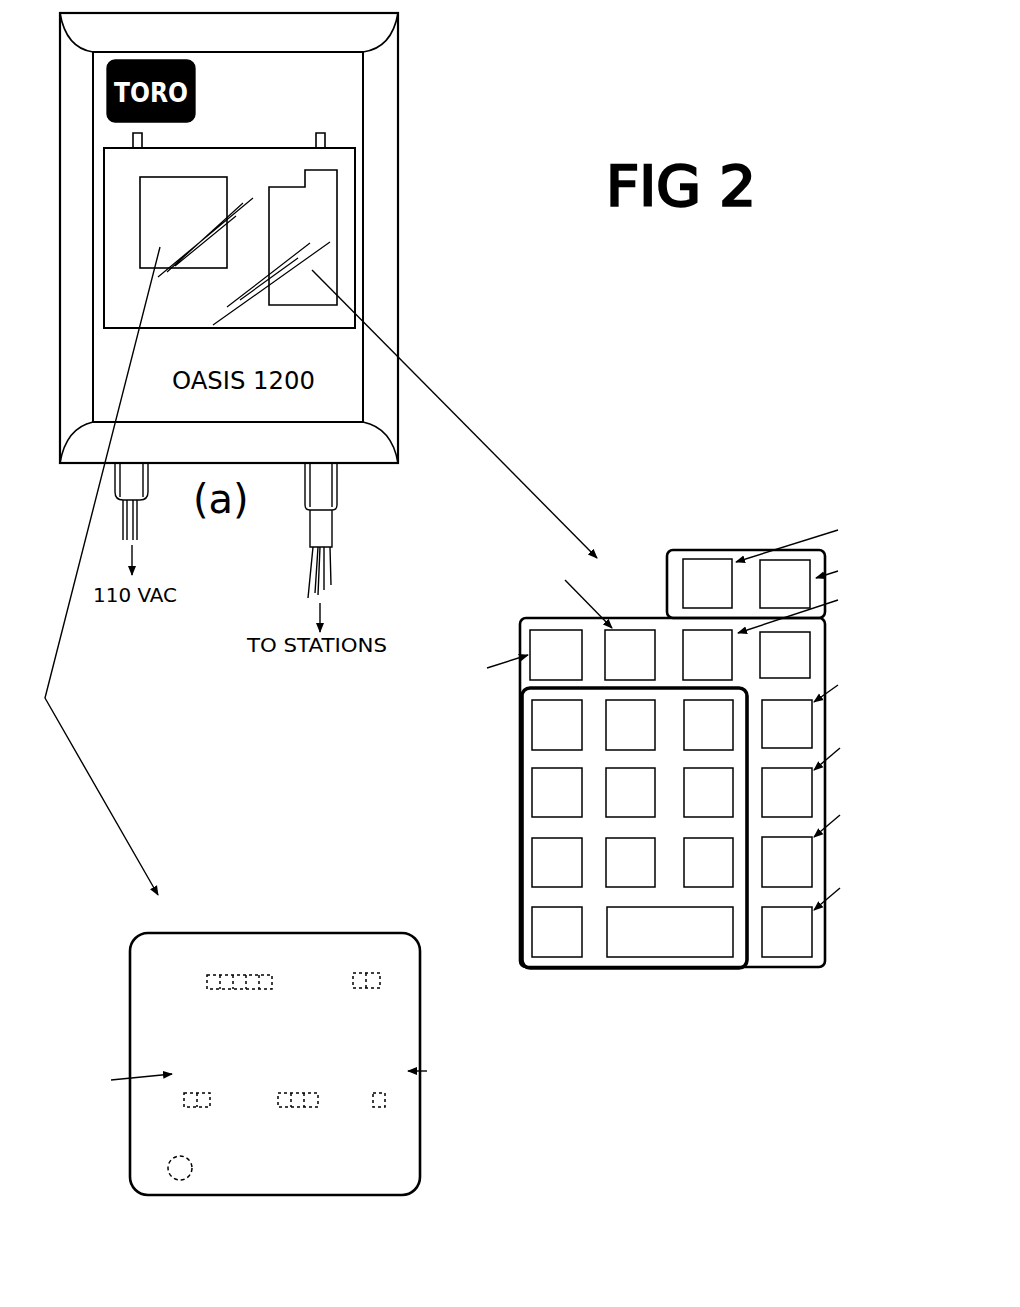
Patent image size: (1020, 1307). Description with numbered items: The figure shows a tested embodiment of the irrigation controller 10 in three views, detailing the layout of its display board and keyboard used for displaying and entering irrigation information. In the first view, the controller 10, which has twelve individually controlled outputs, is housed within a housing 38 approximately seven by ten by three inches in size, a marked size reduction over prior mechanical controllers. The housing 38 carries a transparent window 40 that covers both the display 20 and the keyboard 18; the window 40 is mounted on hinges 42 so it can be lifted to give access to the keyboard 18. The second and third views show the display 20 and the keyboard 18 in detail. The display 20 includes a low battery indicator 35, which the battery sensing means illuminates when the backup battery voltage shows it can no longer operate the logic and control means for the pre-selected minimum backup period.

The controller 10 is at (409, 36).
The housing 38 is at (383, 127).
The transparent window 40 is at (345, 213).
The hinges 42 is at (138, 136).
The display 20 is at (185, 192).
The keyboard 18 is at (327, 265).
The indicator 35 is at (183, 1180).